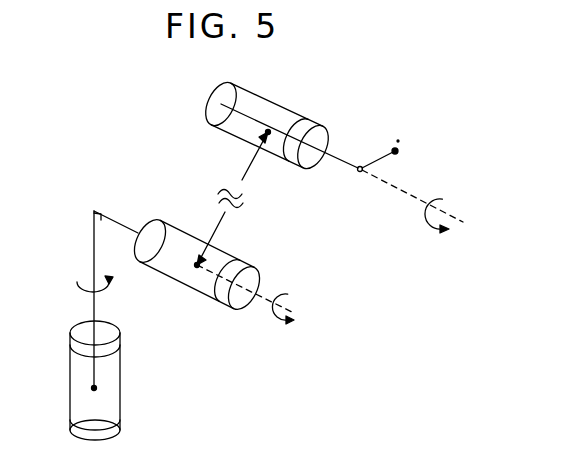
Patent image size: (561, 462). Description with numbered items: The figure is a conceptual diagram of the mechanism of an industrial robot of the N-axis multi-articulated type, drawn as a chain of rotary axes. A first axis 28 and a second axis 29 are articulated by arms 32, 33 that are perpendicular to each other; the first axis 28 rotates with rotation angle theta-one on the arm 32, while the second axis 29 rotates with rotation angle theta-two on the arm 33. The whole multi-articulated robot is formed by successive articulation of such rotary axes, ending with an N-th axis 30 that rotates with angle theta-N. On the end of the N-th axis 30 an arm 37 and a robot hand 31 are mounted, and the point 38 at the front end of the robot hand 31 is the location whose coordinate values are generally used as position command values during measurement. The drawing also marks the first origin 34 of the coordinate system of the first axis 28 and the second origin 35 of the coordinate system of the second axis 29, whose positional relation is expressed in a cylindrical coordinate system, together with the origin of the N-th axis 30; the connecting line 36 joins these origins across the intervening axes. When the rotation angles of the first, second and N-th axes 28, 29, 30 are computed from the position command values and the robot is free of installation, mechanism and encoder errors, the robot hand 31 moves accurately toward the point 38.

The first axis 28 is at (70, 373).
The second axis 29 is at (184, 231).
The N-th axis 30 is at (270, 101).
The robot hand 31 is at (367, 167).
The arm 32 is at (94, 246).
The arm 33 is at (117, 222).
The origin O1 34 is at (98, 388).
The origin O2 35 is at (202, 264).
The connecting line between origins 36 is at (247, 145).
The arm 37 is at (338, 163).
The point 38 is at (395, 153).